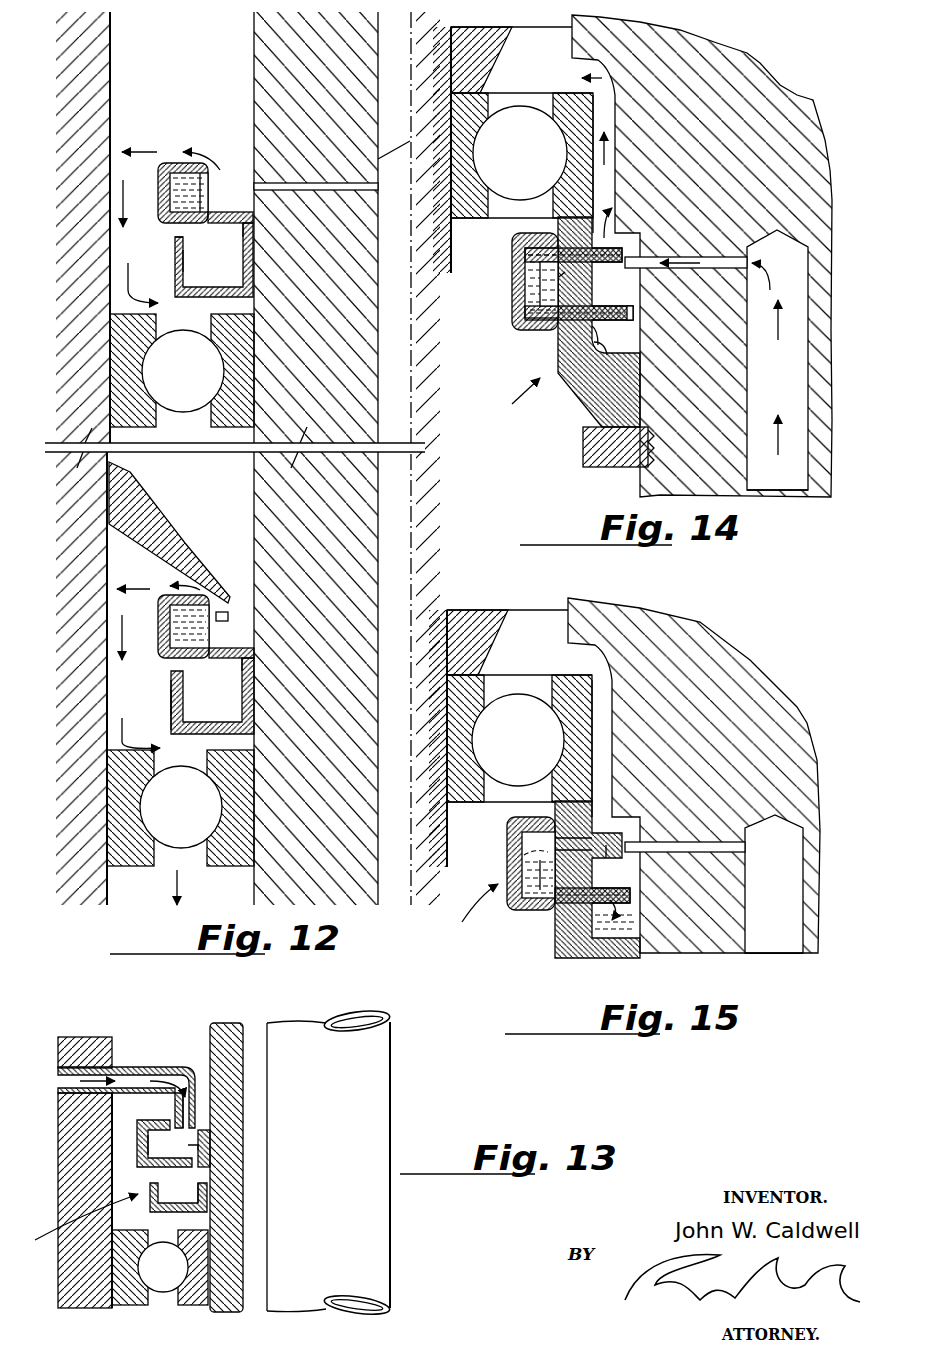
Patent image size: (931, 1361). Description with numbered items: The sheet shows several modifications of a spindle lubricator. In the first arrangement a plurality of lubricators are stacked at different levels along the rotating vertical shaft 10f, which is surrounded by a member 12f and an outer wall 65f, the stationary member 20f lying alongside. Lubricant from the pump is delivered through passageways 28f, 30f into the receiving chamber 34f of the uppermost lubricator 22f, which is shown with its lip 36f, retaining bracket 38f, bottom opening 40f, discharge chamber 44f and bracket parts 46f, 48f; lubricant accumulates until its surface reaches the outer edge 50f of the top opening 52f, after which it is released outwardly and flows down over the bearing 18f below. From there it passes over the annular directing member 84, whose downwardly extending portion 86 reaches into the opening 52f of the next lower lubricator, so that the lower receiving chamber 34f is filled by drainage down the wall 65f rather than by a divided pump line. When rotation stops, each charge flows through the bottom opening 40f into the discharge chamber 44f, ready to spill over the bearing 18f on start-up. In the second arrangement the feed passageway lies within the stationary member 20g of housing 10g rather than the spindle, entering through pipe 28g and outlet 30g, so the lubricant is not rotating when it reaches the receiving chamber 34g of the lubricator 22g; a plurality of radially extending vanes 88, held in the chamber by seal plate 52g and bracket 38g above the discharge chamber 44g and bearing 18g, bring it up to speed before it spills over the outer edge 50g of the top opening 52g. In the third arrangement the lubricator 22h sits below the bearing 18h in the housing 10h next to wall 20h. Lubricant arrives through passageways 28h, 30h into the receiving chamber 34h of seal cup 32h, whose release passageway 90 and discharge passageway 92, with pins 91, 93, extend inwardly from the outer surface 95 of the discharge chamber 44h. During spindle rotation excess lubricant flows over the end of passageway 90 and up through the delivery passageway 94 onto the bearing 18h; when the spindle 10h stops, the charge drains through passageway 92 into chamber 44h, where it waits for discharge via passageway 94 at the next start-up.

In FIG. 12, the vertical shaft 10f is at (292, 36).
In FIG. 12, the rotating member 12f is at (414, 502).
In FIG. 12, the bearing 18f is at (165, 373).
In FIG. 12, the member 20f is at (75, 705).
In FIG. 12, the uppermost lubricator 22f is at (172, 156).
In FIG. 12, the passageway 28f is at (401, 410).
In FIG. 12, the passageway 30f is at (364, 192).
In FIG. 12, the receiving chamber 34f is at (195, 632).
In FIG. 12, the seal lip 36f is at (213, 186).
In FIG. 12, the retaining bracket 38f is at (208, 690).
In FIG. 12, the bottom opening 40f is at (228, 225).
In FIG. 12, the discharge chamber 44f is at (187, 258).
In FIG. 12, the bracket leg 46f is at (178, 697).
In FIG. 12, the bracket tip 48f is at (178, 237).
In FIG. 12, the outer edge 50f is at (215, 178).
In FIG. 12, the top opening 52f is at (243, 170).
In FIG. 12, the wall 65f is at (110, 92).
In FIG. 12, the annular directing member 84 is at (125, 500).
In FIG. 12, the downwardly extending portion 86 is at (232, 614).
In FIG. 13, the housing plate 10g is at (285, 1032).
In FIG. 13, the ball bearing 18g is at (163, 1280).
In FIG. 13, the member 20g is at (78, 1050).
In FIG. 13, the lubricator 22g is at (71, 1222).
In FIG. 13, the lubricant pipe 28g is at (127, 1078).
In FIG. 13, the pipe outlet 30g is at (187, 1115).
In FIG. 13, the receiving chamber 34g is at (194, 1141).
In FIG. 13, the retaining bracket 38g is at (178, 1197).
In FIG. 13, the discharge chamber 44g is at (197, 1198).
In FIG. 13, the outer edge 50g is at (168, 1125).
In FIG. 13, the top opening 52g is at (140, 1135).
In FIG. 13, the radially extending vanes 88 is at (193, 1152).
In FIG. 14, the spindle 10h is at (758, 118).
In FIG. 15, the spindle 10h is at (684, 652).
In FIG. 14, the bearing 18h is at (512, 128).
In FIG. 15, the bearing 18h is at (512, 712).
In FIG. 14, the wall 20h is at (449, 252).
In FIG. 15, the wall 20h is at (452, 612).
In FIG. 14, the lubricator 22h is at (513, 398).
In FIG. 15, the lubricator 22h is at (472, 912).
In FIG. 14, the passageway 28h is at (783, 472).
In FIG. 15, the passageway 28h is at (784, 942).
In FIG. 14, the passageway 30h is at (734, 262).
In FIG. 15, the passageway 30h is at (722, 848).
In FIG. 14, the seal cup 32h is at (522, 252).
In FIG. 15, the seal cup 32h is at (531, 863).
In FIG. 14, the receiving chamber 34h is at (542, 285).
In FIG. 15, the receiving chamber 34h is at (540, 885).
In FIG. 14, the discharge chamber 44h is at (592, 352).
In FIG. 15, the discharge chamber 44h is at (597, 879).
In FIG. 14, the release passageway 90 is at (617, 247).
In FIG. 15, the release passageway 90 is at (606, 842).
In FIG. 14, the radial passage 91 is at (628, 271).
In FIG. 15, the radial passage 91 is at (622, 840).
In FIG. 14, the discharge passageway 92 is at (604, 330).
In FIG. 15, the discharge passageway 92 is at (606, 902).
In FIG. 14, the seal stem 93 is at (628, 316).
In FIG. 15, the seal stem 93 is at (600, 888).
In FIG. 14, the delivery passageway 94 is at (612, 110).
In FIG. 15, the delivery passageway 94 is at (608, 728).
In FIG. 14, the outer surface 95 is at (582, 346).